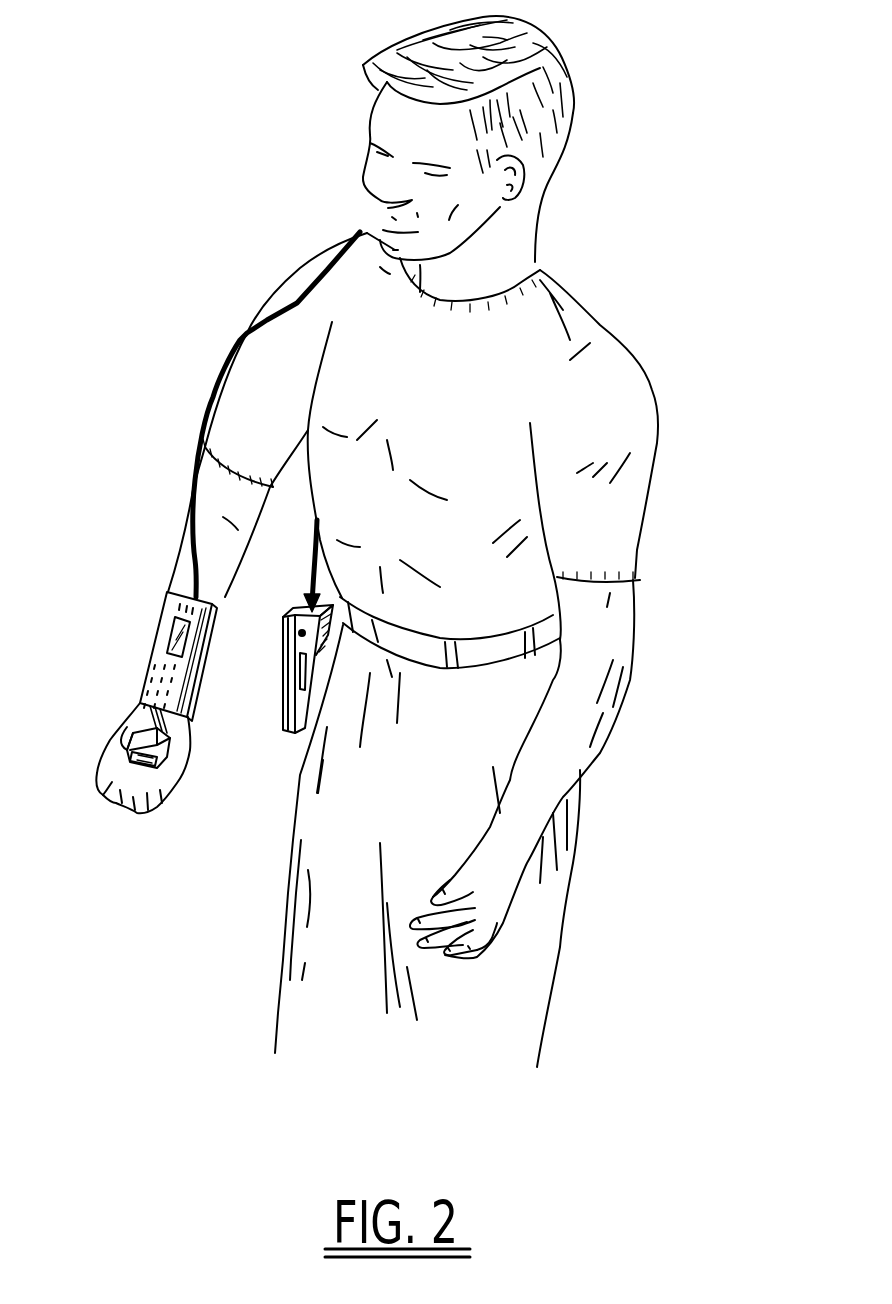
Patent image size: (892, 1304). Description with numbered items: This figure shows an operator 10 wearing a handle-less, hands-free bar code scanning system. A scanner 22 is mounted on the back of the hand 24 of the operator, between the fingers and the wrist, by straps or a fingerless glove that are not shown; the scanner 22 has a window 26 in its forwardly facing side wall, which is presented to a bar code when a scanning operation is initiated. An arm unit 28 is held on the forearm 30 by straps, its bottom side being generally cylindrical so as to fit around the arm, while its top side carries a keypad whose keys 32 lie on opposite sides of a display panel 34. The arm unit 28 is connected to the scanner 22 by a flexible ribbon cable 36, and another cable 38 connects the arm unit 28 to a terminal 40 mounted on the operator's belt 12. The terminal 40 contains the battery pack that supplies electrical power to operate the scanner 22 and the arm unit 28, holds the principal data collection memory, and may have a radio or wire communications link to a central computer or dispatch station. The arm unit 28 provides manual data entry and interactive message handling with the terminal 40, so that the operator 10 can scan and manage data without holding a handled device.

The operator 10 is at (643, 477).
The belt 12 is at (477, 662).
The scanner 22 is at (170, 760).
The hand 24 is at (127, 728).
The window 26 is at (100, 767).
The arm unit 28 is at (157, 614).
The forearm 30 is at (217, 597).
The keys 32 is at (177, 603).
The display panel 34 is at (170, 638).
The flexible ribbon cable 36 is at (170, 727).
The cable 38 is at (295, 303).
The terminal 40 is at (283, 665).